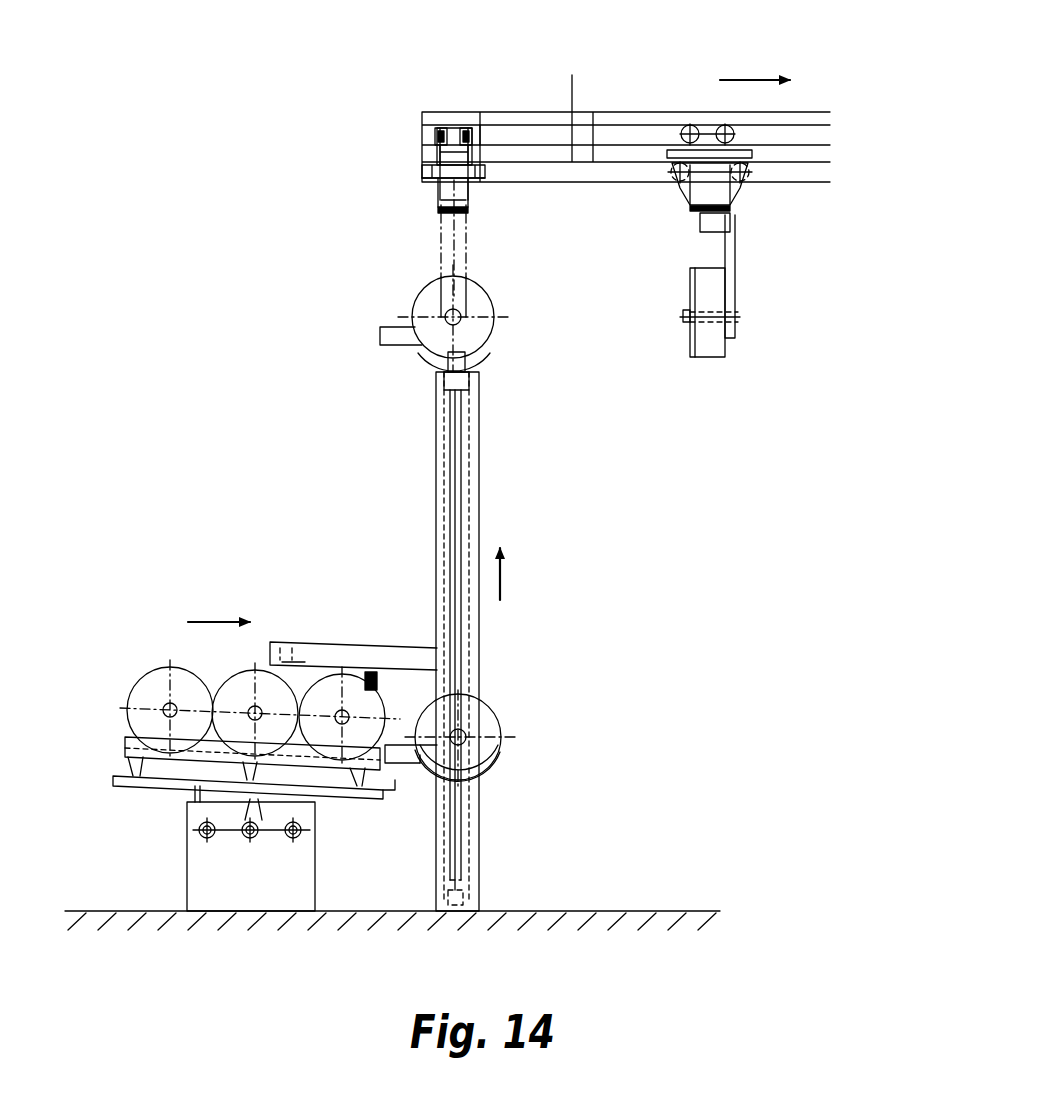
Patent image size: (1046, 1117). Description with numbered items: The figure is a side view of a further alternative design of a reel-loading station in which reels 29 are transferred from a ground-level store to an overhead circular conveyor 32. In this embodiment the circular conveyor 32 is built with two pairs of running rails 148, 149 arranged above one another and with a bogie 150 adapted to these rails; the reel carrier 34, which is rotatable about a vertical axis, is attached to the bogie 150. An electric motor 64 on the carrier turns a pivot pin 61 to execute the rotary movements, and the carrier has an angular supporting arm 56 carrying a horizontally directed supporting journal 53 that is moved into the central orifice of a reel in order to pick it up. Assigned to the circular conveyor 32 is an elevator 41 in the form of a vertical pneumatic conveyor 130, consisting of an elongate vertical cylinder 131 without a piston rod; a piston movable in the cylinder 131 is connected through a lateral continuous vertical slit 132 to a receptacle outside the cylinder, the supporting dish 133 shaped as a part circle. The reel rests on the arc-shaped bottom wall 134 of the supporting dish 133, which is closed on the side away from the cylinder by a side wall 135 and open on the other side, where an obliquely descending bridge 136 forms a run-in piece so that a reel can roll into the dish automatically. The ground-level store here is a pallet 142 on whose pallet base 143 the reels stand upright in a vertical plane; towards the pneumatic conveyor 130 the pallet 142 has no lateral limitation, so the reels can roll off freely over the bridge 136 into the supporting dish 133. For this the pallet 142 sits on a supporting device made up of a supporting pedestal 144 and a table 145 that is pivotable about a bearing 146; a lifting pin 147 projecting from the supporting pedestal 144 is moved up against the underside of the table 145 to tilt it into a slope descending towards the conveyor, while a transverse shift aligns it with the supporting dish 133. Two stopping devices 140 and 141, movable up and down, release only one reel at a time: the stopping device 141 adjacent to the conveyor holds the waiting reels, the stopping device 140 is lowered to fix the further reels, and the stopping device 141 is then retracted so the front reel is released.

The paper reel 29 is at (492, 310).
The circular conveyor 32 is at (631, 108).
The reel carrier 34 is at (688, 238).
The elevator 41 is at (497, 479).
The supporting journal 53 is at (686, 318).
The supporting arm 56 is at (740, 278).
The pivot pin 61 is at (737, 214).
The electric motor 64 is at (470, 196).
The vertical pneumatic conveyor 130 is at (482, 621).
The cylinder 131 is at (433, 452).
The vertical slit 132 is at (457, 447).
The supporting dish 133 is at (445, 358).
The bottom wall 134 is at (490, 770).
The side wall 135 is at (495, 738).
The bridge 136 is at (380, 340).
The stopping device 140 is at (296, 668).
The stopping device 141 is at (373, 690).
The pallet 142 is at (160, 796).
The pallet base 143 is at (115, 760).
The supporting pedestal 144 is at (196, 880).
The table 145 is at (350, 792).
The bearing 146 is at (250, 830).
The lifting pin 147 is at (190, 797).
The running rail 148 is at (466, 128).
The running rail 149 is at (510, 178).
The bogie 150 is at (703, 118).